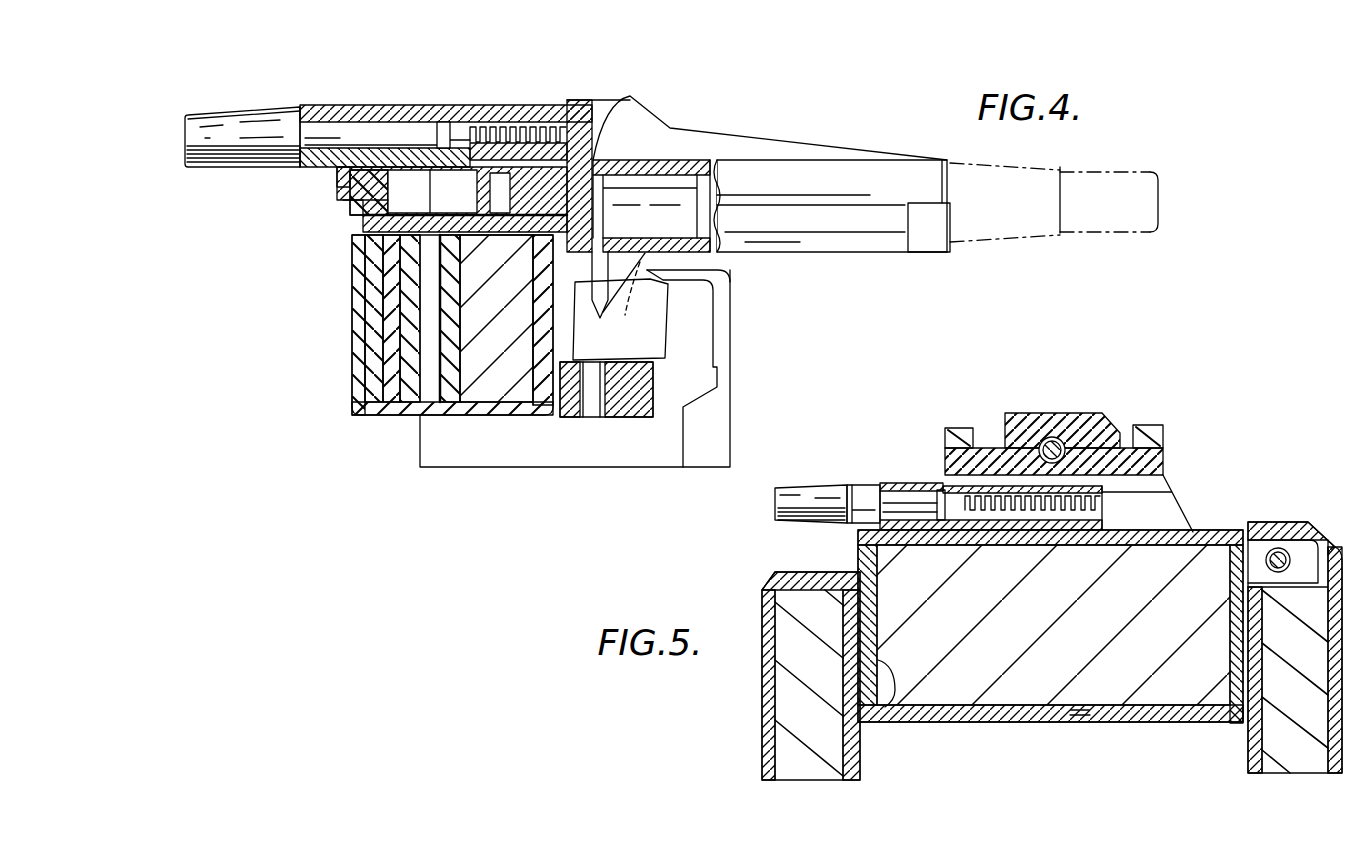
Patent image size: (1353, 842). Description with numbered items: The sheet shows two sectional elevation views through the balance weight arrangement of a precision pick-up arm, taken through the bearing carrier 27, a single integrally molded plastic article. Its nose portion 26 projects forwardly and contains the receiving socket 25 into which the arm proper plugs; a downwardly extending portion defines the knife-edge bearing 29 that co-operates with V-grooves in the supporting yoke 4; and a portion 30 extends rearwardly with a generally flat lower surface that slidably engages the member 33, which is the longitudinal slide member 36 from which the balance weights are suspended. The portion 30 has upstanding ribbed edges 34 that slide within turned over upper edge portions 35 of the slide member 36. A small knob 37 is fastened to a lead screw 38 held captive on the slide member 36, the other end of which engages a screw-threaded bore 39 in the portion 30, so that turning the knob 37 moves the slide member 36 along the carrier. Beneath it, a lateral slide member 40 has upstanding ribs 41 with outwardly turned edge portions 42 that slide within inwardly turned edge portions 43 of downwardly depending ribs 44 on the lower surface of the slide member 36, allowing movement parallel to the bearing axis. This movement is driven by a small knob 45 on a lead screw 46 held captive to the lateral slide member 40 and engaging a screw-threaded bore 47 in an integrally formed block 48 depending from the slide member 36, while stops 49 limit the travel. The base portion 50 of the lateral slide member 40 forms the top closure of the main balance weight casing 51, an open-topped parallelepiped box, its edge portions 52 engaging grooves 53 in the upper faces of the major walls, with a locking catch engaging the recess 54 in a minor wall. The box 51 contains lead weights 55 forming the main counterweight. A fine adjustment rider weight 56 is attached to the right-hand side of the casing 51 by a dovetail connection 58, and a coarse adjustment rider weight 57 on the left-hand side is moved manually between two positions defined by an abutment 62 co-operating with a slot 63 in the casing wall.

In FIG. 4, the supporting yoke 4 is at (713, 342).
In FIG. 4, the receiving socket 25 is at (972, 254).
In FIG. 4, the nose portion 26 is at (835, 182).
In FIG. 4, the bearing carrier 27 is at (672, 118).
In FIG. 4, the knife-edge bearing 29 is at (603, 318).
In FIG. 4, the rearwardly extending portion 30 is at (487, 113).
In FIG. 5, the rearwardly extending portion 30 is at (1010, 425).
In FIG. 4, the member 33 is at (340, 177).
In FIG. 5, the member 33 is at (1167, 462).
In FIG. 5, the upstanding ribbed edges 34 is at (1165, 441).
In FIG. 5, the turned over upper edge portions 35 is at (1143, 424).
In FIG. 4, the longitudinal slide member 36 is at (355, 106).
In FIG. 5, the longitudinal slide member 36 is at (950, 472).
In FIG. 4, the knob 37 is at (200, 166).
In FIG. 4, the lead screw 38 is at (515, 125).
In FIG. 5, the lead screw 38 is at (1040, 432).
In FIG. 4, the screw-threaded bore 39 is at (560, 124).
In FIG. 5, the screw-threaded bore 39 is at (1062, 440).
In FIG. 4, the lateral slide member 40 is at (387, 272).
In FIG. 5, the lateral slide member 40 is at (1172, 512).
In FIG. 4, the upstanding ribs 41 is at (592, 238).
In FIG. 4, the outwardly turned edge portions 42 is at (395, 126).
In FIG. 4, the inwardly turned edge portions 43 is at (440, 150).
In FIG. 4, the downwardly depending ribs 44 is at (345, 205).
In FIG. 5, the knob 45 is at (773, 512).
In FIG. 5, the lead screw 46 is at (1015, 495).
In FIG. 5, the screw-threaded bore 47 is at (1108, 505).
In FIG. 5, the block 48 is at (1040, 535).
In FIG. 5, the stops 49 is at (1145, 518).
In FIG. 4, the base portion 50 is at (395, 290).
In FIG. 5, the base portion 50 is at (975, 533).
In FIG. 4, the main balance weight casing 51 is at (352, 378).
In FIG. 5, the main balance weight casing 51 is at (1032, 712).
In FIG. 4, the edge portions 52 is at (382, 256).
In FIG. 4, the grooves 53 is at (372, 243).
In FIG. 5, the recess 54 is at (853, 548).
In FIG. 4, the lead weights 55 is at (392, 405).
In FIG. 5, the lead weights 55 is at (1090, 702).
In FIG. 5, the fine adjustment rider weight 56 is at (1338, 540).
In FIG. 5, the coarse adjustment rider weight 57 is at (770, 710).
In FIG. 5, the dovetail connection 58 is at (1250, 680).
In FIG. 5, the abutment 62 is at (880, 668).
In FIG. 5, the slot 63 is at (892, 705).